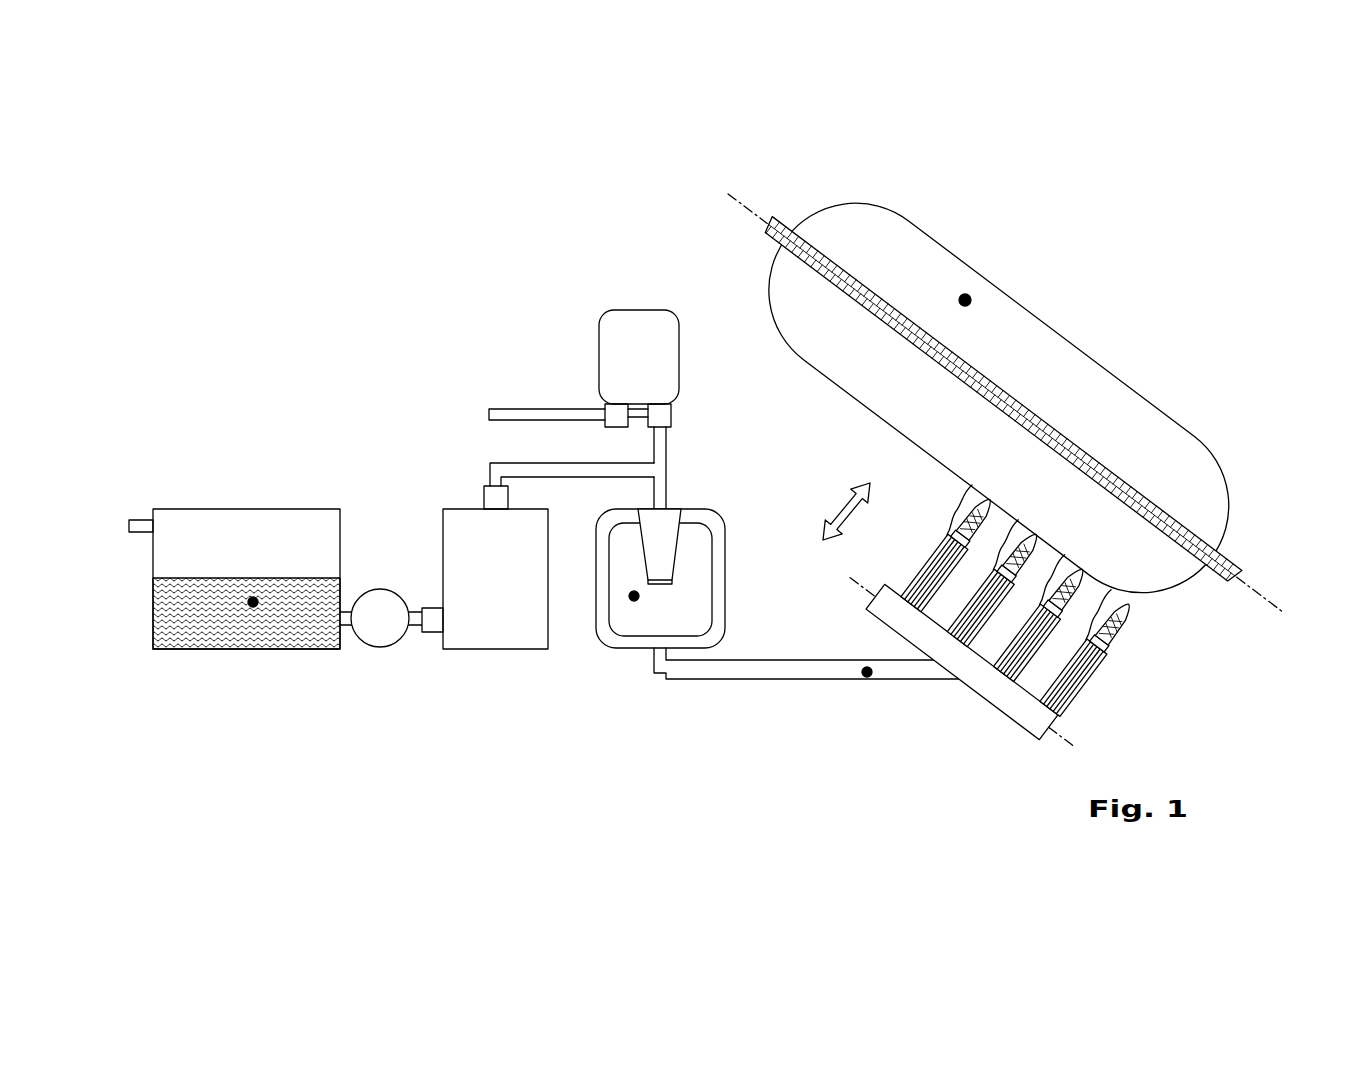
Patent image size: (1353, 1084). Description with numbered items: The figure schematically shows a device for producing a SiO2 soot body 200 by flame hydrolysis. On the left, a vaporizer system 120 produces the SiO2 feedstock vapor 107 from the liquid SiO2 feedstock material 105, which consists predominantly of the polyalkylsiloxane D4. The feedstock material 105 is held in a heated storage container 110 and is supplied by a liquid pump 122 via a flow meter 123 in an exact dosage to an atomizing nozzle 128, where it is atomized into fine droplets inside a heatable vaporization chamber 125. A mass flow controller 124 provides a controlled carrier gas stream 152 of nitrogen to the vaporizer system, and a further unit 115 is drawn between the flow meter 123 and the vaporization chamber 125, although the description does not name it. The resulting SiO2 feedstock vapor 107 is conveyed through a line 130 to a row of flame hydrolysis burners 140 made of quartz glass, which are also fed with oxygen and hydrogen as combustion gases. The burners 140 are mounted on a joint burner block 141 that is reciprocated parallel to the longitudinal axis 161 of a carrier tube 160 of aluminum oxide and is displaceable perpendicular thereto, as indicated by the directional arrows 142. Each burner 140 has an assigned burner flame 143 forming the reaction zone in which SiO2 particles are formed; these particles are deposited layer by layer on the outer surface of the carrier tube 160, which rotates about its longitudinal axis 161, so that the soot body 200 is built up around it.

The SiO2 feedstock material 105 is at (253, 602).
The storage container 110 is at (247, 509).
The liquid pump 122 is at (373, 638).
The flow meter 123 is at (432, 632).
The liquid supply unit 115 is at (497, 649).
The mass flow controller 124 is at (640, 309).
The carrier gas stream 152 is at (531, 413).
The atomizing nozzle 128 is at (657, 533).
The vaporizer system 120 is at (737, 577).
The vaporization chamber 125 is at (634, 596).
The supply pipe 130 is at (737, 672).
The SiO2 feedstock vapor 107 is at (867, 672).
The burner block 141 is at (987, 688).
The flame hydrolysis burners 140 is at (1068, 677).
The burner flame 143 is at (1120, 613).
The directional arrows 142 is at (842, 505).
The carrier tube 160 is at (781, 222).
The longitudinal axis 161 is at (740, 207).
The SiO2 soot body 200 is at (965, 300).